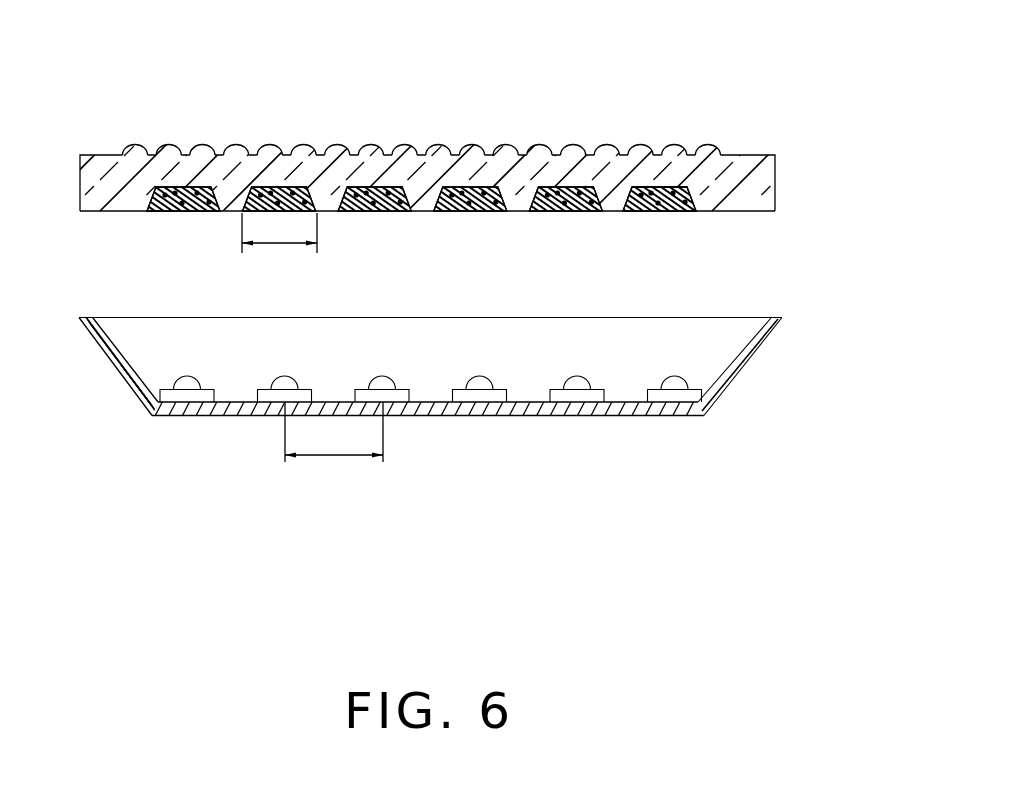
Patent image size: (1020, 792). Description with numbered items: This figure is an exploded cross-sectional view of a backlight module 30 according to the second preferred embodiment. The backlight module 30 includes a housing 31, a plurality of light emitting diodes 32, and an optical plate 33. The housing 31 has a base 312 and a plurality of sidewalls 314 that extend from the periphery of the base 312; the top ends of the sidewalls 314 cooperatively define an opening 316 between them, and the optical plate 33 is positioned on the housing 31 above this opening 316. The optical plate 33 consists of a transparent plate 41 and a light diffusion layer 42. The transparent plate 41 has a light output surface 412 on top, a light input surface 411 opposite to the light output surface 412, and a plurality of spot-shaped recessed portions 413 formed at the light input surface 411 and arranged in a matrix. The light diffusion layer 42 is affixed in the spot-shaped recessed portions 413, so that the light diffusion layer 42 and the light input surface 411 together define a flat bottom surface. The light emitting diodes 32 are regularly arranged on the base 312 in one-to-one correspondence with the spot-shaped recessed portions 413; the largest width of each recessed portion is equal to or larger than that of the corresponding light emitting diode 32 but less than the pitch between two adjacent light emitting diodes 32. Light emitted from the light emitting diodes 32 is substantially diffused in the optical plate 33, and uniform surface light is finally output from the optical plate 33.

The backlight module 30 is at (395, 41).
The optical plate 33 is at (741, 133).
The transparent plate 41 is at (764, 173).
The light input surface 411 is at (92, 209).
The light output surface 412 is at (103, 155).
The spot-shaped recessed portions 413 is at (659, 170).
The light diffusion layer 42 is at (158, 206).
The housing 31 is at (885, 333).
The base 312 is at (688, 410).
The sidewalls 314 is at (758, 338).
The opening 316 is at (727, 318).
The light emitting diodes 32 is at (483, 392).